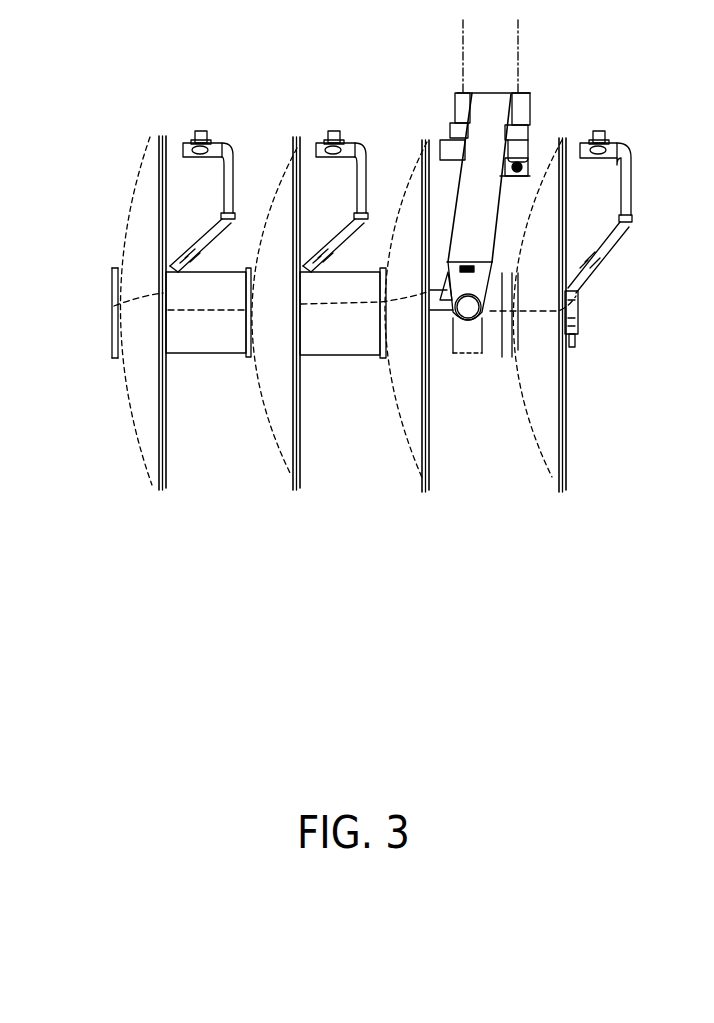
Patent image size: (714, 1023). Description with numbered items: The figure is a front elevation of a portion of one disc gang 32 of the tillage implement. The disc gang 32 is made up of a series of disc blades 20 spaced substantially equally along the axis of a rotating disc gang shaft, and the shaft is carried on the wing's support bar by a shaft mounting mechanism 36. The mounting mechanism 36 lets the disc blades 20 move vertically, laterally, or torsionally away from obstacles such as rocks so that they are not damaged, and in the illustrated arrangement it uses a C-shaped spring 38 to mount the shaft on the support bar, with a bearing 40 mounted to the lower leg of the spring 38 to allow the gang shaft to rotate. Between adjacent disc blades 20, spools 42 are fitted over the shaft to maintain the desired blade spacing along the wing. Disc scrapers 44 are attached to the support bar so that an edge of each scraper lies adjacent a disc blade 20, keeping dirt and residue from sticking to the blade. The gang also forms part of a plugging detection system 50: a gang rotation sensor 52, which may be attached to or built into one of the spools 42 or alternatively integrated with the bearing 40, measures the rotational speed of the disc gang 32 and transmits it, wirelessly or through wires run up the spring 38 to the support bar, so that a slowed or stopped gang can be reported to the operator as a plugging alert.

The disc blade 20 is at (145, 460).
The disc gang 32 is at (310, 532).
The shaft mounting mechanism 36 is at (500, 218).
The C-shaped spring 38 is at (528, 212).
The bearing 40 is at (448, 347).
The spool 42 is at (203, 354).
The disc scraper 44 is at (203, 233).
The plugging detection system 50 is at (363, 463).
The gang rotation sensor 52 is at (355, 268).